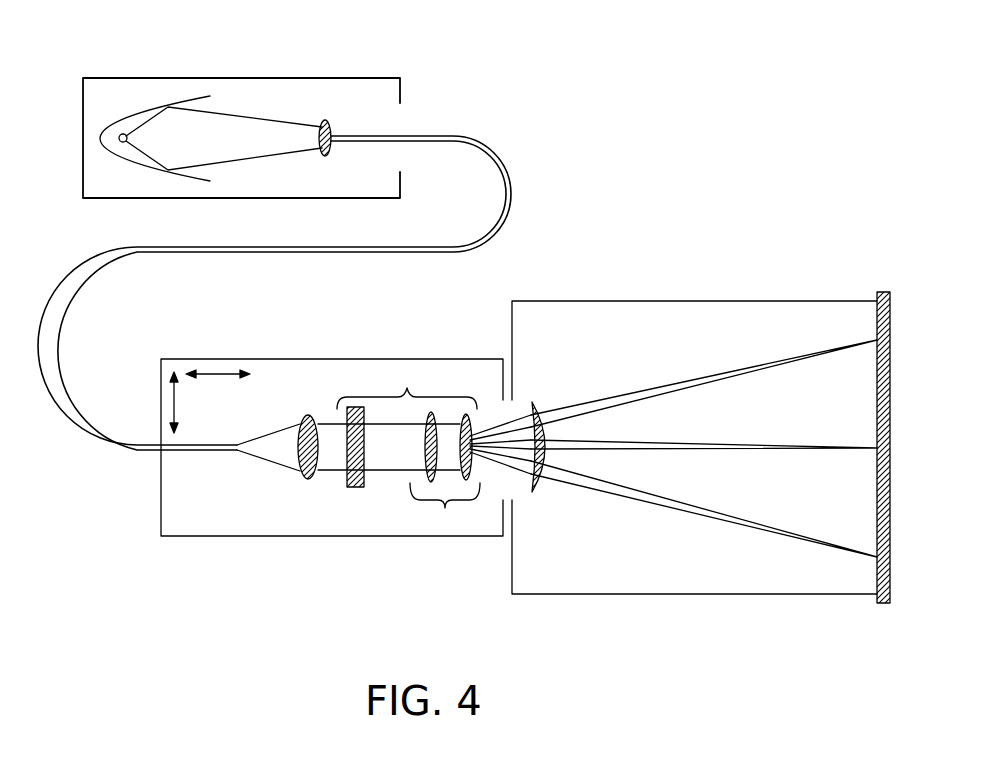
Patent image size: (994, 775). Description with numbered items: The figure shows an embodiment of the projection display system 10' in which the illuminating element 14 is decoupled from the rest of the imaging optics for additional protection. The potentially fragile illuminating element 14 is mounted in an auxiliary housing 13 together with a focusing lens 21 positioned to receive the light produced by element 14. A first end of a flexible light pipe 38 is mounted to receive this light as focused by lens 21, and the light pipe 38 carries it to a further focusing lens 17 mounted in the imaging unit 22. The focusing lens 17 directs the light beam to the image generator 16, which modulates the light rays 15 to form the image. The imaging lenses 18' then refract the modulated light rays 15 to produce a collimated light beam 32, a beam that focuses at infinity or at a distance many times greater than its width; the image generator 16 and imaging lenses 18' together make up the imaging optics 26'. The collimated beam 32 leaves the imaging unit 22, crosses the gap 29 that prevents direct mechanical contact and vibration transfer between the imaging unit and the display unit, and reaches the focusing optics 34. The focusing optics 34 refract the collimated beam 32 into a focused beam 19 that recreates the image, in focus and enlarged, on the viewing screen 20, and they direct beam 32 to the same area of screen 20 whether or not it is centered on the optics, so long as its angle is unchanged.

The auxiliary housing 13 is at (182, 77).
The illuminating element 14 is at (135, 156).
The focusing lens 21 is at (325, 118).
The flexible light pipe 38 is at (425, 135).
The projection display system 10' is at (332, 413).
The focused beam 19 is at (213, 372).
The imaging unit 22 is at (320, 401).
The further focusing lens 17 is at (308, 482).
The light rays 15 is at (330, 472).
The image generator 16 is at (357, 490).
The imaging lenses 18' is at (445, 496).
The imaging optics 26' is at (407, 362).
The collimated light beam 32 is at (503, 424).
The gap 29 is at (510, 303).
The focusing optics 34 is at (541, 490).
The viewing screen 20 is at (874, 598).